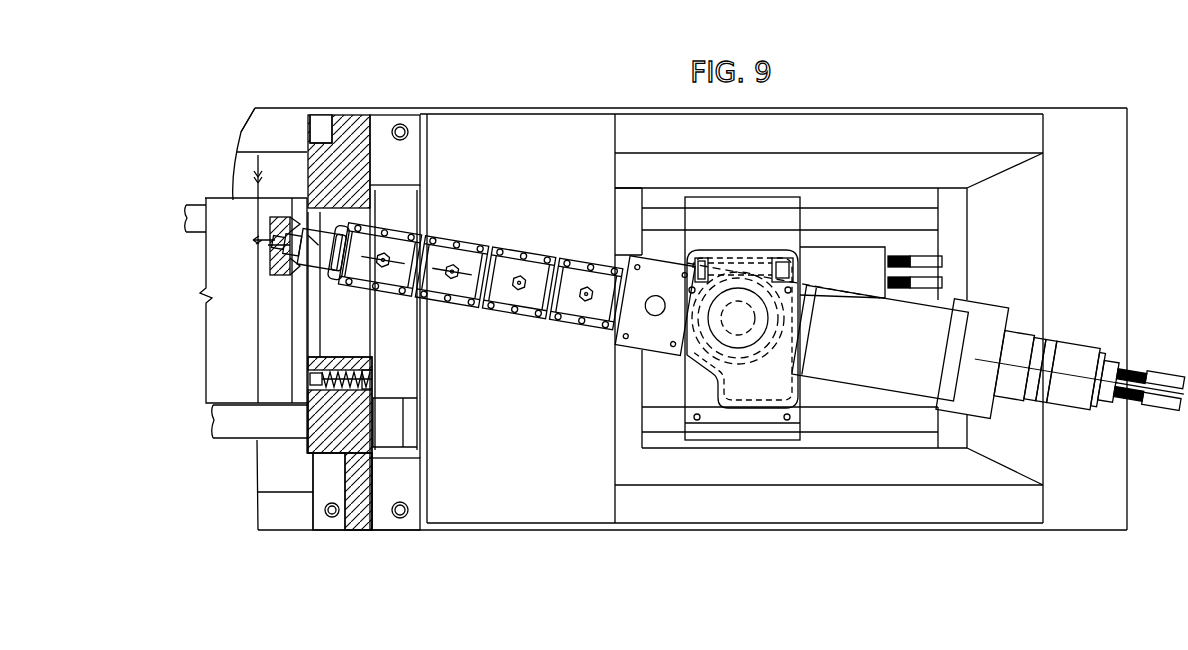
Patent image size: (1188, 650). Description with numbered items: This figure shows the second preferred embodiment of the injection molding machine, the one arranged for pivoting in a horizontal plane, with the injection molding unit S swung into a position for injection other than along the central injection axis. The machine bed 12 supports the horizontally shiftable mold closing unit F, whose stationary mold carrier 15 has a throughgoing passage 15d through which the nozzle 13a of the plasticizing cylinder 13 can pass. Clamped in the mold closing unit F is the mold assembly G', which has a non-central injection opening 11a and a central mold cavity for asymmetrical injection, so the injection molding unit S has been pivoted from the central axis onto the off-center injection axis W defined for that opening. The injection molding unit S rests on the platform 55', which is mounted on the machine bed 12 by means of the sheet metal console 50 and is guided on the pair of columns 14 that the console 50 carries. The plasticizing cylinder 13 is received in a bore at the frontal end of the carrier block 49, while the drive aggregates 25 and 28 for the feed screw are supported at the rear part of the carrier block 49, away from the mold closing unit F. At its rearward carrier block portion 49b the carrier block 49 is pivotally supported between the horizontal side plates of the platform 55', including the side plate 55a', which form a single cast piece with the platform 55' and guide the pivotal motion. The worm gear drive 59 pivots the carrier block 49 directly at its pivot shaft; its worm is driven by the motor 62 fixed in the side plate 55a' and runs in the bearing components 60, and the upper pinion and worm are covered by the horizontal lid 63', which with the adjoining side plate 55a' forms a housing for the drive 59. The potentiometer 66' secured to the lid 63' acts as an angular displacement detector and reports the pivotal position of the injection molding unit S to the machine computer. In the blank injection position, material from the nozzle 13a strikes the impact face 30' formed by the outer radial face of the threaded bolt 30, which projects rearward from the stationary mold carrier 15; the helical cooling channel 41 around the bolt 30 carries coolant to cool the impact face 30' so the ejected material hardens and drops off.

The machine bed 12 is at (872, 538).
The columns 14 is at (893, 215).
The console 50 is at (968, 470).
The mold closing unit F is at (234, 122).
The stationary mold carrier 15 is at (328, 106).
The throughgoing passage 15d is at (362, 316).
The non-central injection opening 11a is at (278, 268).
The nozzle 13a is at (272, 222).
The injection axis W is at (255, 244).
The plasticizing cylinder 13 is at (498, 256).
The injection molding unit S is at (592, 244).
The rearward carrier block portion 49b is at (673, 282).
The carrier block 49 is at (632, 364).
The platform 55' is at (741, 282).
The horizontal lid 63' is at (742, 363).
The potentiometer 66' is at (740, 336).
The bearing components 60 is at (700, 257).
The worm gear drive 59 is at (753, 257).
The motor 62 is at (868, 282).
The side plate 55a' is at (875, 343).
The drive aggregate 25 is at (940, 320).
The drive aggregate 28 is at (1075, 395).
The threaded bolt 30 is at (402, 368).
The impact face 30' is at (429, 380).
The cooling channel 41 is at (373, 396).
The mold assembly G' is at (262, 467).